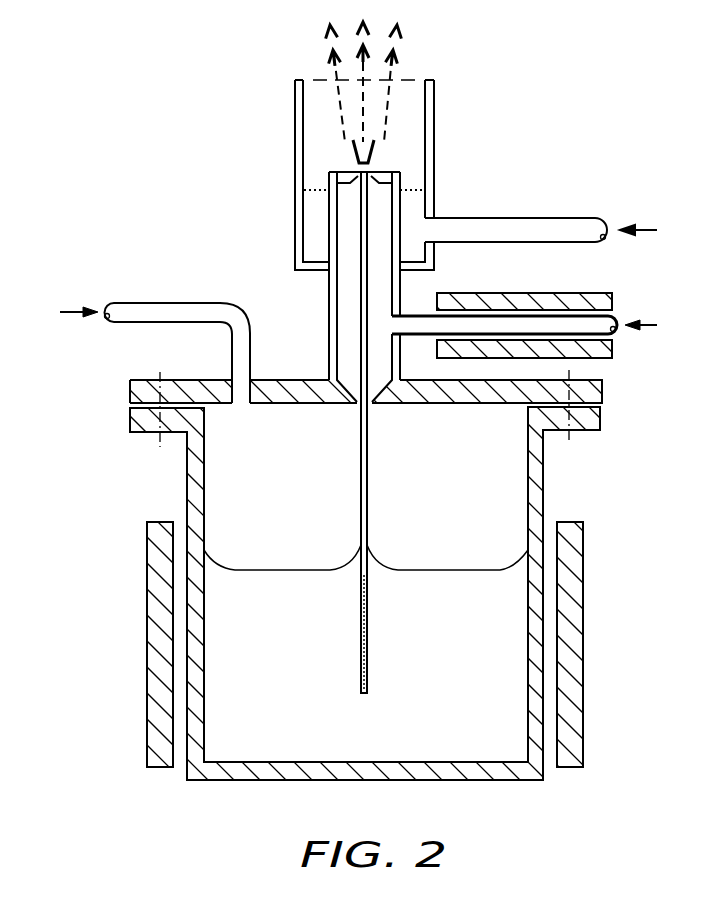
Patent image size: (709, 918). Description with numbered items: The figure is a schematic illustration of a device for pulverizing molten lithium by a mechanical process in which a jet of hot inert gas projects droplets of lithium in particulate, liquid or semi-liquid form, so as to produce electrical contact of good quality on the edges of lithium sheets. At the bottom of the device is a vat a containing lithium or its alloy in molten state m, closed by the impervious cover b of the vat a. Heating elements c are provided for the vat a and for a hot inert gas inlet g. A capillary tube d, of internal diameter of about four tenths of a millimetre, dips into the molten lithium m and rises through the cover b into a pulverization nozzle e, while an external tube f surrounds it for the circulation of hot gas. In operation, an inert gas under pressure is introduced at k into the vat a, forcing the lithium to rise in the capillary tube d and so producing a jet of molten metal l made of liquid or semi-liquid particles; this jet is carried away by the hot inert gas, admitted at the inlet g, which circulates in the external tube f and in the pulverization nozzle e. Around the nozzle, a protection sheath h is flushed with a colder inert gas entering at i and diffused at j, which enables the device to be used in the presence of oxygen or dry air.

The vat a is at (193, 484).
The impervious cover b is at (203, 380).
The heating elements c is at (553, 348).
The capillary tube d is at (367, 481).
The pulverization nozzle e is at (383, 175).
The external tube f is at (332, 322).
The hot inert gas inlet g is at (613, 320).
The protection sheath h is at (295, 136).
The colder inert gas inlet i is at (550, 224).
The gas diffusion point j is at (304, 190).
The pressurized inert gas inlet k is at (152, 323).
The jet of molten metal l is at (366, 142).
The molten lithium m is at (515, 707).